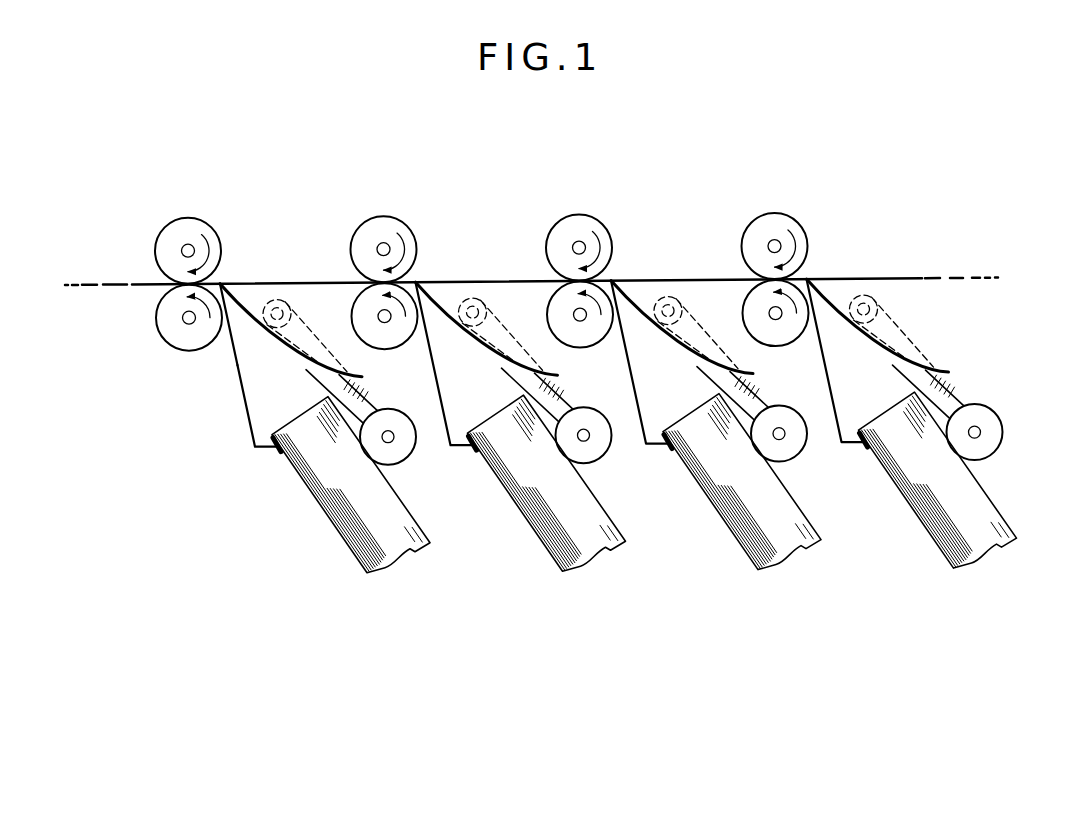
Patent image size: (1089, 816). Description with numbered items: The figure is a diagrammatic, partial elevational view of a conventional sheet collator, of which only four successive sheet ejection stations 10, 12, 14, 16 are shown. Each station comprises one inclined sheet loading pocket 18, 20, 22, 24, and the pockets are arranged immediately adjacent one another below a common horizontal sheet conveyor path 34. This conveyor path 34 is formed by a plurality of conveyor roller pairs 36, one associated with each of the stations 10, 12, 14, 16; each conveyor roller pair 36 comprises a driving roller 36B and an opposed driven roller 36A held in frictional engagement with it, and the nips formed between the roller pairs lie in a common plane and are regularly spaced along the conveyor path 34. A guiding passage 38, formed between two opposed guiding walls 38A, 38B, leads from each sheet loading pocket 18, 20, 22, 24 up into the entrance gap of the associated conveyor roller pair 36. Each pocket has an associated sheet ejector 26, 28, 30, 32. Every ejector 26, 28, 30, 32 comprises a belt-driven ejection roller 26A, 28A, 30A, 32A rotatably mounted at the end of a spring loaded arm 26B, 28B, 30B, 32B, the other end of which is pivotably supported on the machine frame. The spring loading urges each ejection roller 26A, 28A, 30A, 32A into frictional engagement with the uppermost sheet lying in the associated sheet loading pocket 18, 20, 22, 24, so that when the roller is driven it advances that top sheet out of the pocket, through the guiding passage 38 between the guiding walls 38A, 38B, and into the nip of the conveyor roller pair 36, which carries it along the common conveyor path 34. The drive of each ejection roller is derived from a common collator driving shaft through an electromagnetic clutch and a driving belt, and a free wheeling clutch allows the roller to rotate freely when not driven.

The sheet ejection station 10 is at (318, 350).
The sheet ejection station 12 is at (535, 349).
The sheet ejection station 14 is at (697, 347).
The sheet ejection station 16 is at (907, 346).
The sheet loading pocket 18 is at (341, 485).
The sheet loading pocket 20 is at (547, 483).
The sheet loading pocket 22 is at (742, 482).
The sheet loading pocket 24 is at (938, 480).
The sheet ejector 26 is at (358, 395).
The ejection roller 26A is at (407, 450).
The spring loaded arm 26B is at (327, 397).
The sheet ejector 28 is at (551, 394).
The ejection roller 28A is at (605, 448).
The spring loaded arm 28B is at (512, 387).
The sheet ejector 30 is at (741, 393).
The ejection roller 30A is at (799, 448).
The spring loaded arm 30B is at (704, 387).
The sheet ejector 32 is at (961, 377).
The ejection roller 32A is at (1009, 432).
The spring loaded arm 32B is at (938, 377).
The sheet conveyor path 34 is at (875, 277).
The conveyor roller pair 36 is at (140, 250).
The driven roller 36A is at (203, 233).
The driving roller 36B is at (167, 322).
The guiding passage 38 is at (219, 347).
The guiding wall 38A is at (230, 406).
The guiding wall 38B is at (275, 331).